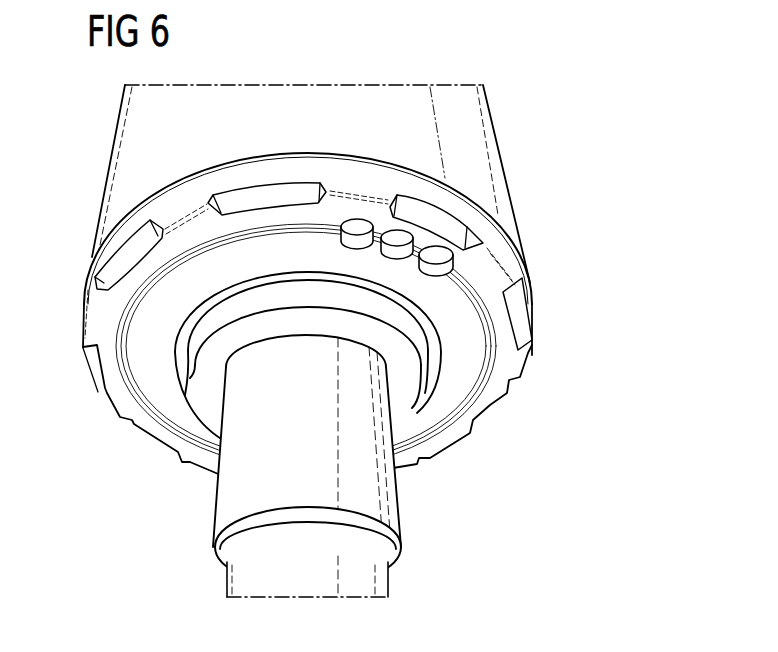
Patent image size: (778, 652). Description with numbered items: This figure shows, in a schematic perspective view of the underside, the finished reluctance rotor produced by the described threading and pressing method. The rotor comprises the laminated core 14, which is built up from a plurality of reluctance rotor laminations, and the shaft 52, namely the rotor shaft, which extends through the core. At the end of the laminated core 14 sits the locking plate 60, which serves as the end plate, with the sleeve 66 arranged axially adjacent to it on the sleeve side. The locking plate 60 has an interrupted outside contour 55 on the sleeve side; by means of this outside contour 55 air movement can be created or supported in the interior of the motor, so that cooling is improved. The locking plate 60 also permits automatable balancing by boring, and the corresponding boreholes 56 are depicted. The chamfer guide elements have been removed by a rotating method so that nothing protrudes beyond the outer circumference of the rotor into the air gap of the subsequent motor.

The laminated core 14 is at (450, 97).
The shaft 52 is at (385, 492).
The interrupted outside contour 55 is at (525, 310).
The boreholes 56 is at (437, 253).
The locking plate 60 is at (502, 366).
The sleeve 66 is at (412, 412).